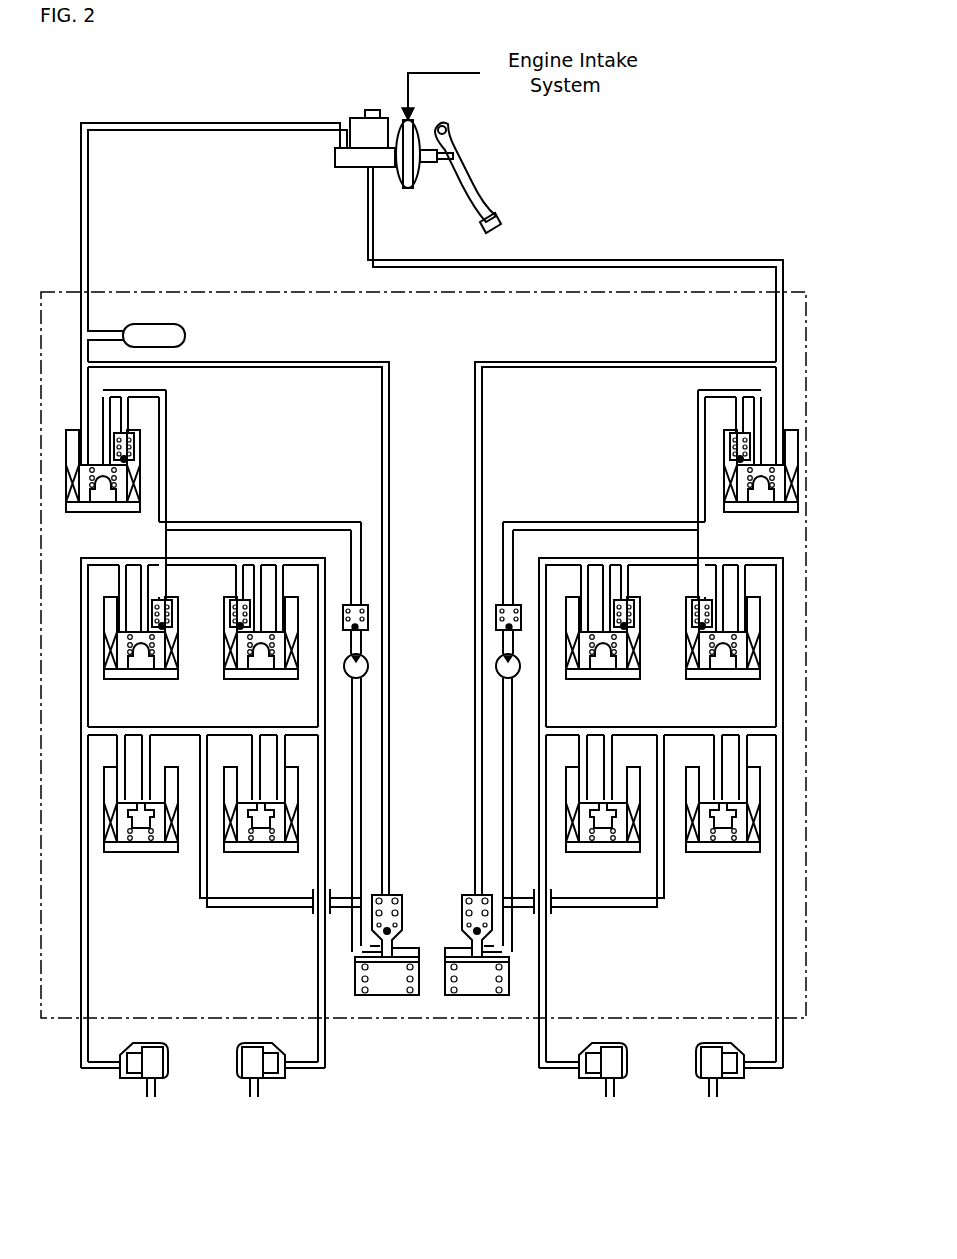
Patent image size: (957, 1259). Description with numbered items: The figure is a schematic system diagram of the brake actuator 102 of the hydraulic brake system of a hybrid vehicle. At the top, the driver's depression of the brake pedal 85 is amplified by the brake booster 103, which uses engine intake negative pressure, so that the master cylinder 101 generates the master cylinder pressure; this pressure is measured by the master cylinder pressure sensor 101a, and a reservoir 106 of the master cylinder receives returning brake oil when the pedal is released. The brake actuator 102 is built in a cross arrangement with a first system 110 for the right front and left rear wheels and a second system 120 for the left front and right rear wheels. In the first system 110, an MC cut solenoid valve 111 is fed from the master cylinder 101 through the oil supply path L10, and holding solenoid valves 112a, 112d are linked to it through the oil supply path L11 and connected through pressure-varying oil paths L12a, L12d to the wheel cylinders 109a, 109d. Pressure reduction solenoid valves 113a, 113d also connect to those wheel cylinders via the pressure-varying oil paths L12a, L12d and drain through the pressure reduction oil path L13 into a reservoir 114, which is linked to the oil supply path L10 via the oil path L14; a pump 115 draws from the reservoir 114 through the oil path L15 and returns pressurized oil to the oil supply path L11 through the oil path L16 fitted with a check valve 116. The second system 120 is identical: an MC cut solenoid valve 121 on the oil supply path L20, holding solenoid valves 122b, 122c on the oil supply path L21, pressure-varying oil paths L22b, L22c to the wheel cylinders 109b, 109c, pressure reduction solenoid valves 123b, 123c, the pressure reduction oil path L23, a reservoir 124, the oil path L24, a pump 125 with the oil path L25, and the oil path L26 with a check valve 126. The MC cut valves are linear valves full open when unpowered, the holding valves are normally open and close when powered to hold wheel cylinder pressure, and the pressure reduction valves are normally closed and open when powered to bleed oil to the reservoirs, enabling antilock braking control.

The brake pedal 85 is at (500, 225).
The master cylinder 101 is at (345, 168).
The master cylinder pressure sensor 101a is at (186, 335).
The brake actuator 102 is at (245, 292).
The brake booster 103 is at (405, 190).
The reservoir 106 is at (350, 118).
The wheel cylinder 109a is at (170, 1078).
The wheel cylinder 109b is at (746, 1078).
The wheel cylinder 109c is at (628, 1078).
The wheel cylinder 109d is at (288, 1078).
The first system 110 is at (340, 350).
The MC cut solenoid valve 111 is at (96, 513).
The holding solenoid valve 112a is at (118, 682).
The holding solenoid valve 112d is at (232, 682).
The pressure reduction solenoid valve 113a is at (118, 852).
The pressure reduction solenoid valve 113d is at (235, 852).
The reservoir 114 is at (388, 997).
The pump 115 is at (368, 660).
The check valve 116 is at (368, 615).
The second system 120 is at (510, 350).
The MC cut solenoid valve 121 is at (748, 513).
The holding solenoid valve 122b is at (692, 682).
The holding solenoid valve 122c is at (575, 682).
The pressure reduction solenoid valve 123b is at (697, 852).
The pressure reduction solenoid valve 123c is at (580, 852).
The reservoir 124 is at (476, 997).
The pump 125 is at (498, 676).
The check valve 126 is at (496, 612).
The oil supply path L10 is at (112, 133).
The oil supply path L11 is at (168, 455).
The pressure-varying oil path L12a is at (98, 989).
The pressure-varying oil path L12d is at (312, 989).
The pressure reduction oil path L13 is at (232, 907).
The oil path L14 is at (381, 456).
The oil path L15 is at (390, 870).
The oil path L16 is at (240, 522).
The oil supply path L20 is at (703, 260).
The oil supply path L21 is at (696, 455).
The pressure-varying oil path L22b is at (767, 989).
The pressure-varying oil path L22c is at (556, 989).
The pressure reduction oil path L23 is at (578, 907).
The oil path L24 is at (484, 456).
The oil path L25 is at (495, 832).
The oil path L26 is at (550, 522).